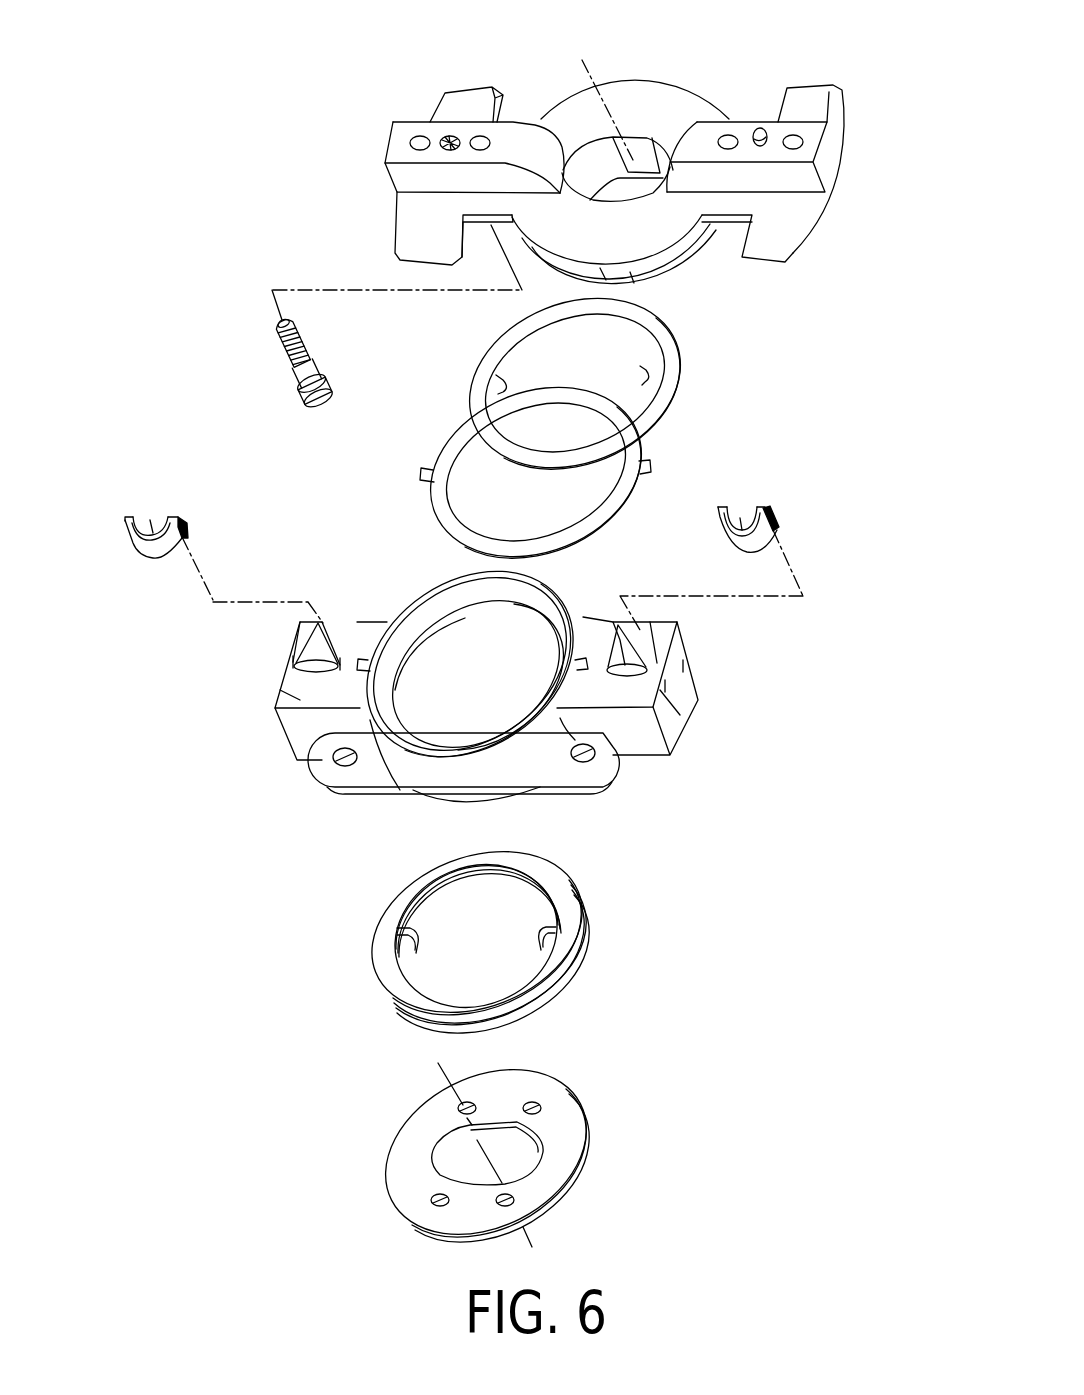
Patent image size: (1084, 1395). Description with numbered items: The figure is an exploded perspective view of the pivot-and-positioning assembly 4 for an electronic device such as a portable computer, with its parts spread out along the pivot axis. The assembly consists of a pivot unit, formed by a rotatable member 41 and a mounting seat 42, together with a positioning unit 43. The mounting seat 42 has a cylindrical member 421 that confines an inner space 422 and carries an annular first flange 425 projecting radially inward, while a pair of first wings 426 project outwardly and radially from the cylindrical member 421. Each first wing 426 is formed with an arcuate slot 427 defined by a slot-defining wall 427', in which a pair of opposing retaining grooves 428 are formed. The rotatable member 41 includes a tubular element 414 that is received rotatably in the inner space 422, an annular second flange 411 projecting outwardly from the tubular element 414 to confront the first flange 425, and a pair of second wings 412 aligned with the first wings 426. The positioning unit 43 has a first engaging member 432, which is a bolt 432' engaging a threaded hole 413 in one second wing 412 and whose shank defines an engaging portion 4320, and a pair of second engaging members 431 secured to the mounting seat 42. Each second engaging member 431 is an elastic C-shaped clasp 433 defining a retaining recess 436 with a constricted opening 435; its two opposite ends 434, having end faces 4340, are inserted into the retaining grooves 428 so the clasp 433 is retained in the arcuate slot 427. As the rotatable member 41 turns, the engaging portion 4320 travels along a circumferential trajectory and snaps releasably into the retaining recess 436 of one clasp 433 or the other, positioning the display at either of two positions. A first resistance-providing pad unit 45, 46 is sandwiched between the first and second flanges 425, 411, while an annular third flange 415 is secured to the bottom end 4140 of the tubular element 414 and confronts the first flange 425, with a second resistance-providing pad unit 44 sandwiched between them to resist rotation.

The pivot-and-positioning assembly 4 is at (160, 121).
The rotatable member 41 is at (803, 280).
The annular second flange 411 is at (673, 82).
The second wings 412 is at (463, 102).
The threaded hole 413 is at (450, 140).
The tubular element 414 is at (690, 247).
The bottom end 4140 is at (657, 280).
The annular third flange 415 is at (567, 1113).
The mounting seat 42 is at (680, 795).
The cylindrical member 421 is at (447, 583).
The inner space 422 is at (427, 723).
The annular first flange 425 is at (523, 598).
The first wings 426 is at (287, 700).
The arcuate slot 427 is at (376, 610).
The slot-defining wall 427' is at (470, 649).
The retaining grooves 428 is at (340, 666).
The positioning unit 43 is at (139, 374).
The second engaging members 431 is at (147, 488).
The first engaging member 432 is at (294, 372).
The engaging portion 4320 is at (320, 370).
The bolt 432' is at (280, 405).
The elastic C-shaped clasp 433 is at (153, 548).
The ends 434 is at (133, 517).
The constricted opening 435 is at (157, 520).
The retaining recess 436 is at (153, 520).
The end faces 4340 is at (187, 530).
The second resistance-providing pad unit 44 is at (601, 942).
The first resistance-providing pad unit 45 is at (495, 360).
The first resistance-providing pad unit 46 is at (458, 445).